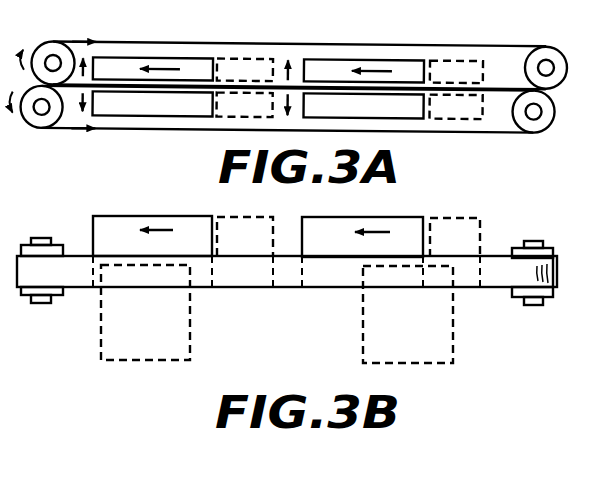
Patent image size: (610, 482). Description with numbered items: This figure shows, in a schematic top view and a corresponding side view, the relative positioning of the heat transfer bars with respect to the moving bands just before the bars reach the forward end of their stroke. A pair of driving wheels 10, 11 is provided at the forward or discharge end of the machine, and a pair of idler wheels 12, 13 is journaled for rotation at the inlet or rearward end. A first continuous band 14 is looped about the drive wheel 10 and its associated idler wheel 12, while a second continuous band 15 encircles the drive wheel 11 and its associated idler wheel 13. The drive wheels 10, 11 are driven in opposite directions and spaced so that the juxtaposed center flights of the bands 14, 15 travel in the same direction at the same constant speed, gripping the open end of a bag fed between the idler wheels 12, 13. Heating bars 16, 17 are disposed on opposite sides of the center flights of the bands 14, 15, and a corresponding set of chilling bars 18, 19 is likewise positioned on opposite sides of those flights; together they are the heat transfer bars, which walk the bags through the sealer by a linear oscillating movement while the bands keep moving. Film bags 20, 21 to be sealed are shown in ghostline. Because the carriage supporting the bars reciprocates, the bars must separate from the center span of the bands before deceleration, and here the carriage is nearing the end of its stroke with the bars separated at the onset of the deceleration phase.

In FIG. 3A, the driving wheel 10 is at (47, 55).
In FIG. 3A, the driving wheel 11 is at (39, 118).
In FIG. 3B, the driving wheel 11 is at (58, 245).
In FIG. 3A, the idler wheel 12 is at (553, 52).
In FIG. 3A, the idler wheel 13 is at (538, 120).
In FIG. 3B, the idler wheel 13 is at (546, 247).
In FIG. 3A, the first continuous band 14 is at (116, 41).
In FIG. 3A, the second continuous band 15 is at (101, 127).
In FIG. 3B, the second continuous band 15 is at (292, 278).
In FIG. 3A, the heating bar 16 is at (405, 65).
In FIG. 3A, the heating bar 17 is at (402, 116).
In FIG. 3B, the heating bar 17 is at (406, 226).
In FIG. 3A, the chilling bar 18 is at (187, 62).
In FIG. 3A, the chilling bar 19 is at (176, 110).
In FIG. 3B, the chilling bar 19 is at (126, 220).
In FIG. 3B, the film bag 20 is at (438, 339).
In FIG. 3B, the film bag 21 is at (116, 328).